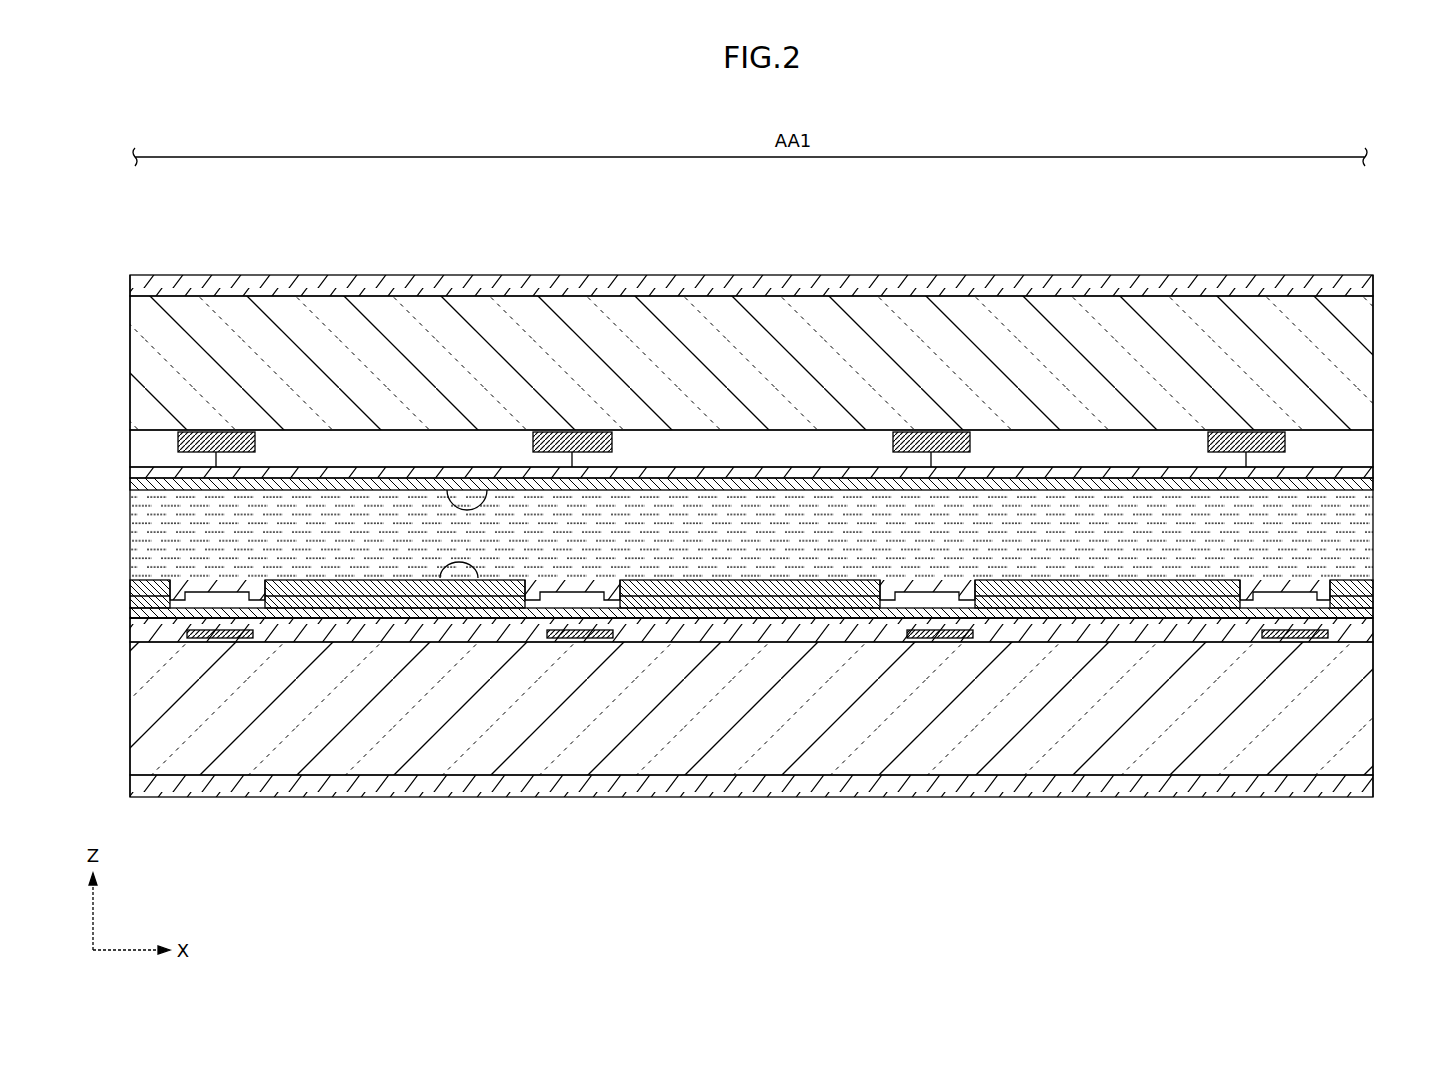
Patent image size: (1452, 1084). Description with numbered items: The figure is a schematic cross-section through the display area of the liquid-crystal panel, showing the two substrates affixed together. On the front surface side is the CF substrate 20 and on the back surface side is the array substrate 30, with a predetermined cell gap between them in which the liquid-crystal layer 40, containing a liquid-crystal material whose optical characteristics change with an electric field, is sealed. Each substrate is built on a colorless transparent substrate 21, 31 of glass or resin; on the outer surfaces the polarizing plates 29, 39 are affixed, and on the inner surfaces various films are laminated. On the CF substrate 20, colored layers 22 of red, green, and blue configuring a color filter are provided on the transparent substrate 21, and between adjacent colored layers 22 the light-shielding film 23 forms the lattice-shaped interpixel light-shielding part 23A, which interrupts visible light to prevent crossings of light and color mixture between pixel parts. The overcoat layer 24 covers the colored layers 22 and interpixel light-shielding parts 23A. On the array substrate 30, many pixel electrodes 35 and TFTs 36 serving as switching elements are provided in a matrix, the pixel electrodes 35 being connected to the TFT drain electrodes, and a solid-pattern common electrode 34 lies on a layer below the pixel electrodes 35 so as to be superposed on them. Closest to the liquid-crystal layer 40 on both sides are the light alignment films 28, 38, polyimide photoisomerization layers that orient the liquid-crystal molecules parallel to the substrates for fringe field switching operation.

The CF substrate 20 is at (781, 359).
The transparent substrate 21 is at (1307, 345).
The colored layers 22 is at (1037, 455).
The light-shielding film 23 is at (731, 342).
The interpixel light-shielding part 23A is at (907, 432).
The overcoat layer 24 is at (693, 477).
The light alignment film 28 is at (447, 488).
The polarizing plate 29 is at (296, 292).
The array substrate 30 is at (781, 713).
The transparent substrate 31 is at (1285, 753).
The common electrode 34 is at (787, 607).
The pixel electrodes 35 is at (717, 613).
The TFTs 36 is at (580, 630).
The light alignment film 38 is at (432, 620).
The polarizing plate 39 is at (311, 782).
The liquid-crystal layer 40 is at (1327, 553).